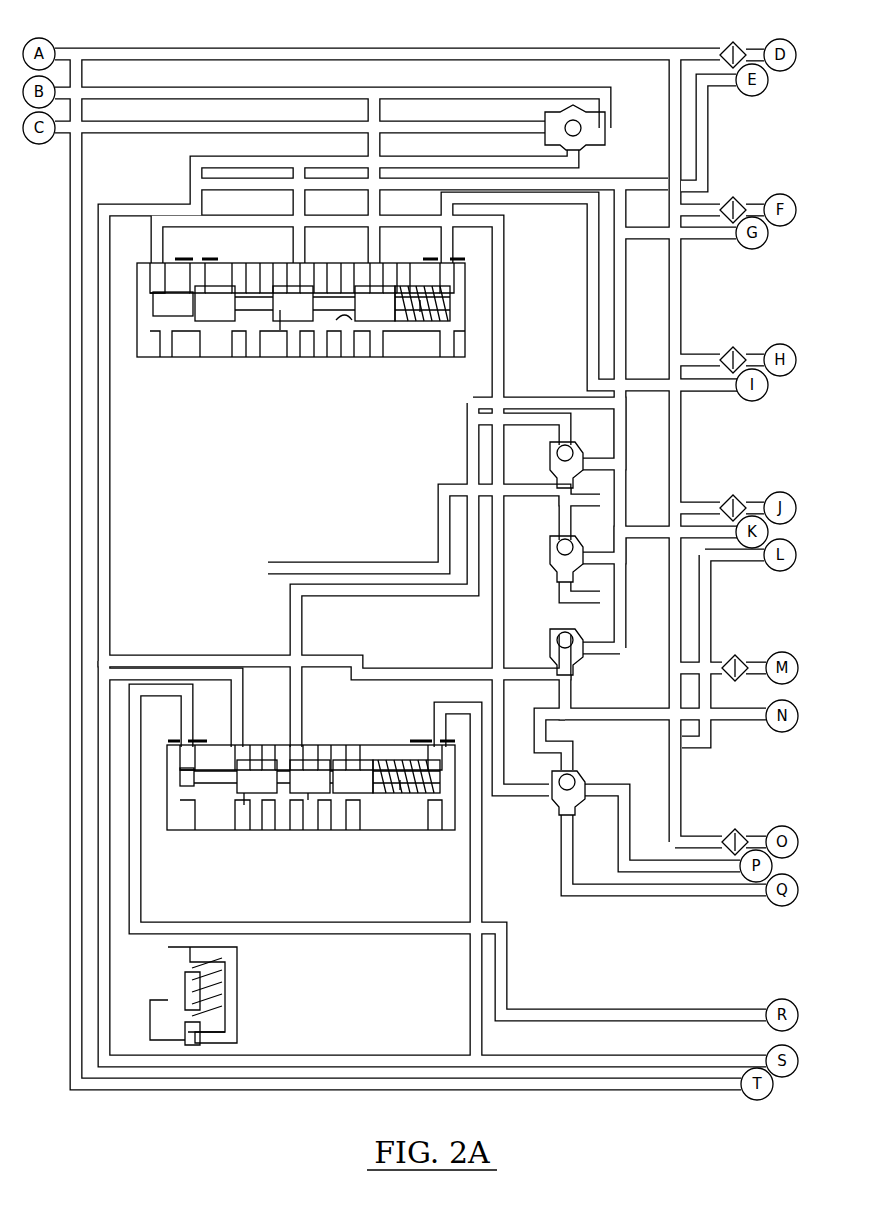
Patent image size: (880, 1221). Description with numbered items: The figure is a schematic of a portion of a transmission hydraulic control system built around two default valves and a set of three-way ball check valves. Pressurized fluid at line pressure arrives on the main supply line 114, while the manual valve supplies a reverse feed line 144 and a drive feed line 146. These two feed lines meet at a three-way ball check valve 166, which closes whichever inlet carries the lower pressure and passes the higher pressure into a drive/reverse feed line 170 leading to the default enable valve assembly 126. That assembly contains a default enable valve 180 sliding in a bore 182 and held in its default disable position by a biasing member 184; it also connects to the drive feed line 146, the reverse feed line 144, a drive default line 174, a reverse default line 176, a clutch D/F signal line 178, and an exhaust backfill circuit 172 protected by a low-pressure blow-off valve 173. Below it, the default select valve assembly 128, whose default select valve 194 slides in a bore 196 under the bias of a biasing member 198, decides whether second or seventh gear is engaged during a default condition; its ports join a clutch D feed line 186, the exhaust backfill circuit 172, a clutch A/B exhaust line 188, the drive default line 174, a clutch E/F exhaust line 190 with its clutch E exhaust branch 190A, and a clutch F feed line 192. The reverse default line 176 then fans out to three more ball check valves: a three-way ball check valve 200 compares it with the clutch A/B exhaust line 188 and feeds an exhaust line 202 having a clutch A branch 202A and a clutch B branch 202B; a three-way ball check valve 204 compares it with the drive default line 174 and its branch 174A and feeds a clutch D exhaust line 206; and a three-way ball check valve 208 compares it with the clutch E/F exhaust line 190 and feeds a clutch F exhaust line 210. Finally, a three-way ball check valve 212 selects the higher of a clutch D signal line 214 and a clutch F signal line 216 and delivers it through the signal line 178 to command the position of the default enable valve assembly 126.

The main supply line 114 is at (166, 47).
The default enable valve assembly 126 is at (200, 378).
The default select valve assembly 128 is at (200, 845).
The reverse feed line 144 is at (118, 86).
The drive feed line 146 is at (128, 134).
The three-way ball check valve 166 is at (574, 70).
The drive/reverse feed line 170 is at (318, 152).
The exhaust backfill circuit 172 is at (111, 458).
The blow-off valve 173 is at (240, 995).
The drive default line 174 is at (505, 205).
The drive default line branch 174A is at (728, 393).
The reverse default line 176 is at (552, 224).
The clutch D/F signal line 178 is at (490, 380).
The default enable valve 180 is at (282, 312).
The bore 182 is at (340, 320).
The biasing member 184 is at (422, 322).
The clutch D feed line 186 is at (355, 920).
The clutch A/B exhaust line 188 is at (332, 562).
The clutch E/F exhaust line 190 is at (406, 670).
The clutch E exhaust branch 190A is at (735, 722).
The clutch F feed line 192 is at (483, 880).
The default select valve 194 is at (308, 778).
The bore 196 is at (250, 785).
The biasing member 198 is at (410, 790).
The three-way ball check valve 200 is at (614, 484).
The exhaust line 202 is at (628, 288).
The clutch A branch 202A is at (722, 88).
The clutch B branch 202B is at (722, 240).
The three-way ball check valve 204 is at (510, 570).
The clutch D exhaust line 206 is at (726, 540).
The three-way ball check valve 208 is at (515, 668).
The clutch F exhaust line 210 is at (632, 826).
The three-way ball check valve 212 is at (542, 815).
The clutch D signal line 214 is at (693, 750).
The clutch F signal line 216 is at (600, 900).